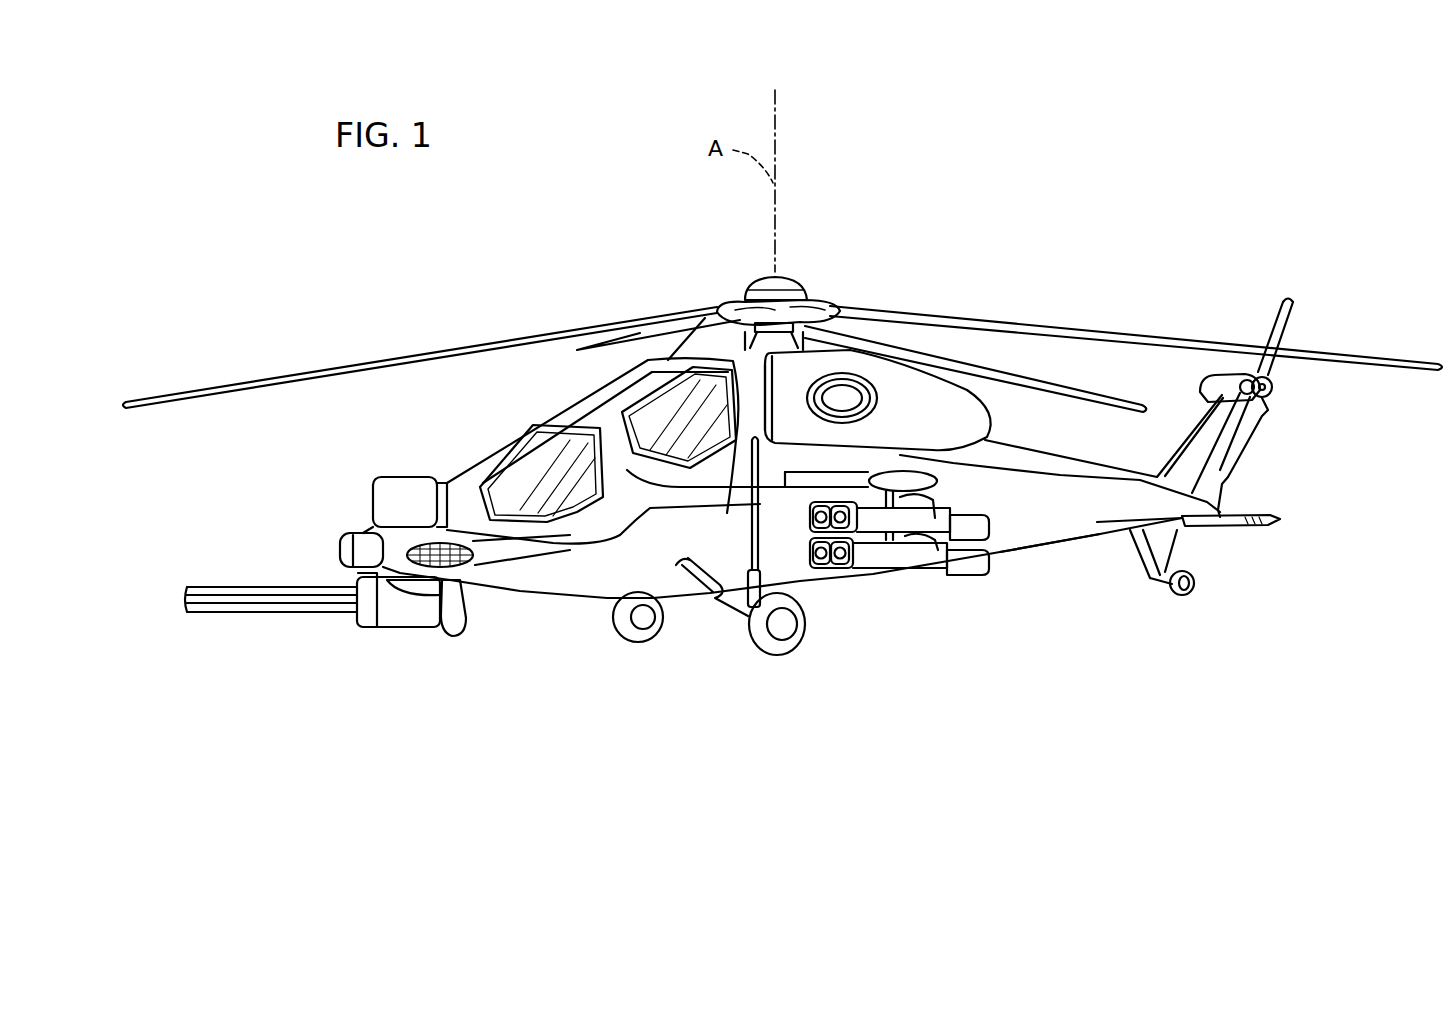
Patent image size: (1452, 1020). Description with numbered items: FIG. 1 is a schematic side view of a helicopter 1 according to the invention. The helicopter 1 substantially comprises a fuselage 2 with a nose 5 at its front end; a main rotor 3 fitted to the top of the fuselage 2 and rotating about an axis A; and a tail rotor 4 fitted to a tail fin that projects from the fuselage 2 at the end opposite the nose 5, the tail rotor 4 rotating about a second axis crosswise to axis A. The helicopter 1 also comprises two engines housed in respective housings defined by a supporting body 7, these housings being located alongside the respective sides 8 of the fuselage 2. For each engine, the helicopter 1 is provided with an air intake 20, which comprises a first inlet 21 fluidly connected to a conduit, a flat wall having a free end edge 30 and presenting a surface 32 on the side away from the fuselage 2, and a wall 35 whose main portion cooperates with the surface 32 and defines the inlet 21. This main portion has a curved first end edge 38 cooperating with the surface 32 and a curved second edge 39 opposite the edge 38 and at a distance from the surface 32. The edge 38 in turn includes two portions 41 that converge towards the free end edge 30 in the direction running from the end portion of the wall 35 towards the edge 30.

The helicopter 1 is at (1033, 213).
The fuselage 2 is at (1097, 522).
The main rotor 3 is at (813, 299).
The tail rotor 4 is at (1248, 430).
The nose 5 is at (386, 536).
The supporting body 7 is at (973, 418).
The sides of fuselage 8 is at (1020, 523).
The air intake 20 is at (818, 418).
The first inlet 21 is at (856, 388).
The free end edge 30 is at (765, 402).
The surface 32 is at (795, 452).
The wall 35 is at (820, 362).
The curved first end edge 38 is at (720, 357).
The curved second edge 39 is at (873, 430).
The converging portions 41 is at (874, 406).